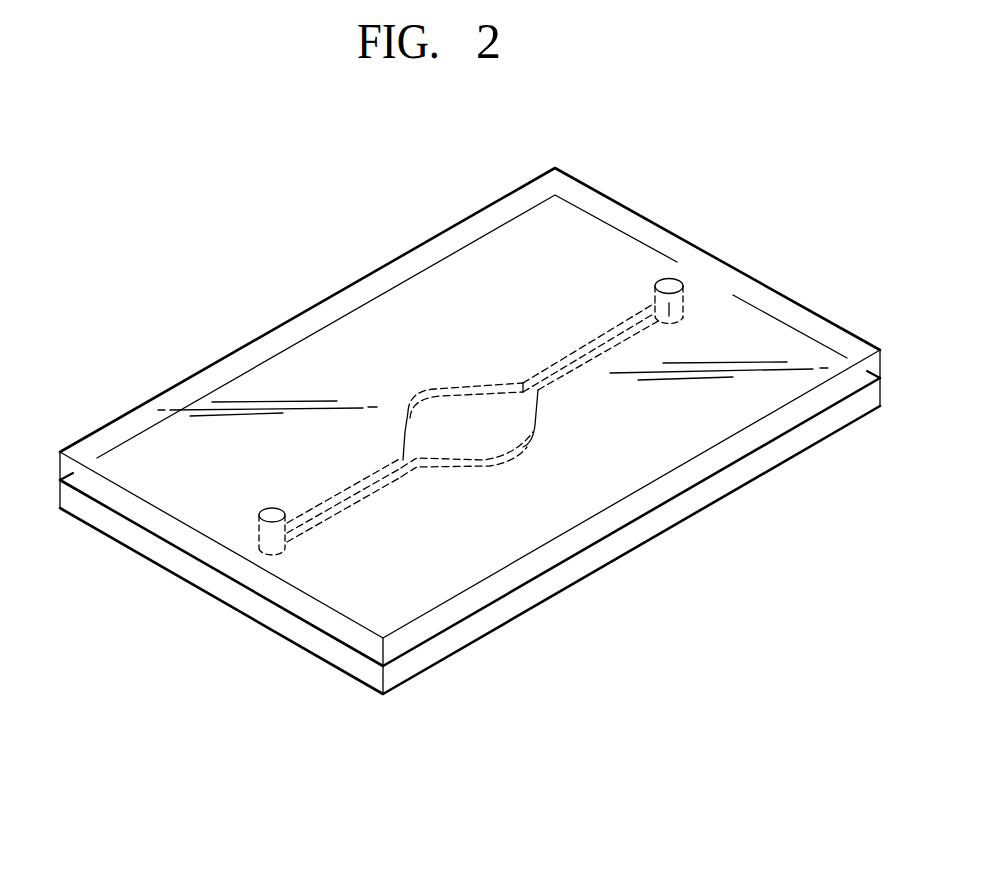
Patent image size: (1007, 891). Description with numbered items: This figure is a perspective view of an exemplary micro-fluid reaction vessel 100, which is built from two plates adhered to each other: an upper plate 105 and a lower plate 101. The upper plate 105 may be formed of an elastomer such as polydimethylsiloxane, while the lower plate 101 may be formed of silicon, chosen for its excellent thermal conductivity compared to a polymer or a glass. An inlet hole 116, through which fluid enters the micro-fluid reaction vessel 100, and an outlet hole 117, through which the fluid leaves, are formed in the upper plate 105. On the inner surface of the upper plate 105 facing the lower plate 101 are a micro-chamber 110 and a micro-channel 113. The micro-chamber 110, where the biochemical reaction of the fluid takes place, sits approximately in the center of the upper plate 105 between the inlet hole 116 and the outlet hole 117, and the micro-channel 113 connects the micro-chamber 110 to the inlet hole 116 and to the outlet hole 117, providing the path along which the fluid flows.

The micro-fluid reaction vessel 100 is at (200, 313).
The lower plate 101 is at (225, 583).
The upper plate 105 is at (297, 597).
The micro-chamber 110 is at (495, 438).
The micro-channel 113 is at (355, 497).
The inlet hole 116 is at (272, 514).
The outlet hole 117 is at (672, 287).